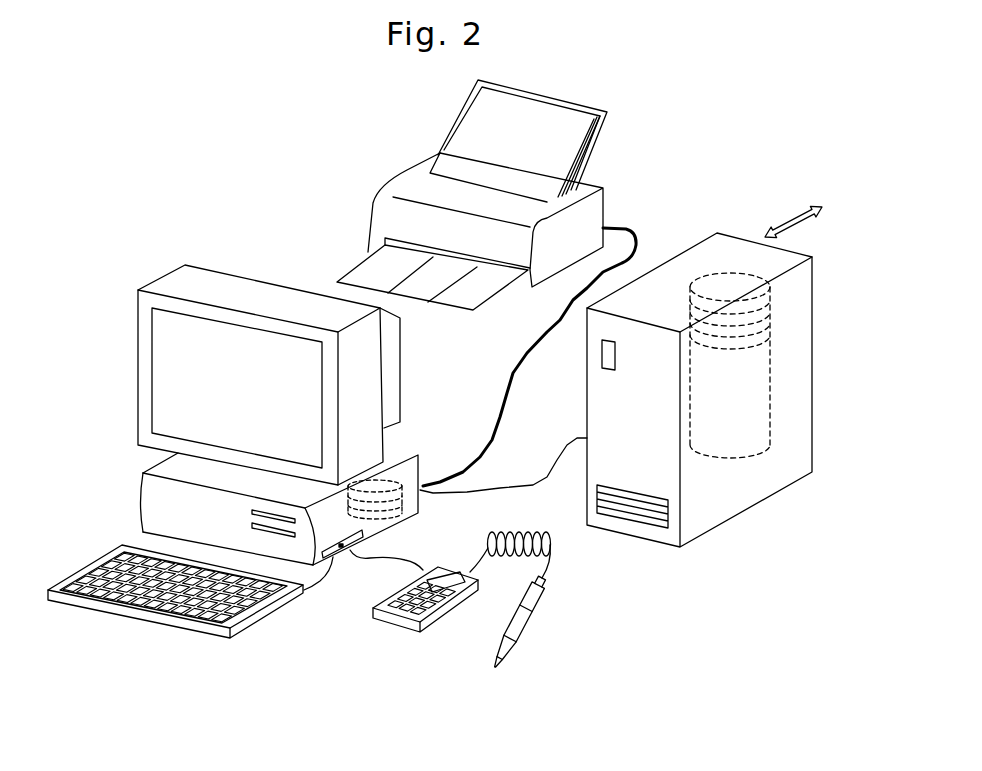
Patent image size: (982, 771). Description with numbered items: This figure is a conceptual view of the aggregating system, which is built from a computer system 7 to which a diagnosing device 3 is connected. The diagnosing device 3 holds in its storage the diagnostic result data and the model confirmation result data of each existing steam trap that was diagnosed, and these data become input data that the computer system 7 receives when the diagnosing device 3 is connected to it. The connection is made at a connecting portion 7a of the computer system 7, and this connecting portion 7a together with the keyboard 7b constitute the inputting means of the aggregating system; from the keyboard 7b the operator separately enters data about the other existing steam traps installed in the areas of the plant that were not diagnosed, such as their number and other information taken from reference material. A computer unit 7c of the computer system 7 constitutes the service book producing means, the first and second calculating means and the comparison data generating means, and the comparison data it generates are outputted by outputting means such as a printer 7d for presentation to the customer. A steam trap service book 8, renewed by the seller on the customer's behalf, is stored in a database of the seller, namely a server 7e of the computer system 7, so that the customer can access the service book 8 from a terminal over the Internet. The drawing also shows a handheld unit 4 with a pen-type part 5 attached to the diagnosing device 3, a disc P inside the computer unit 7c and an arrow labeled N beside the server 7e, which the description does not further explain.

The computer system 7 is at (208, 188).
The connecting portion 7a is at (361, 549).
The keyboard 7b is at (95, 562).
The computer unit 7c is at (143, 502).
The printer 7d is at (403, 173).
The server 7e is at (713, 510).
The steam trap service book 8 is at (767, 340).
The program P is at (418, 513).
The diagnosing device 3 is at (463, 556).
The handheld terminal 4 is at (395, 618).
The pen-type scanner 5 is at (540, 614).
The network N is at (794, 205).